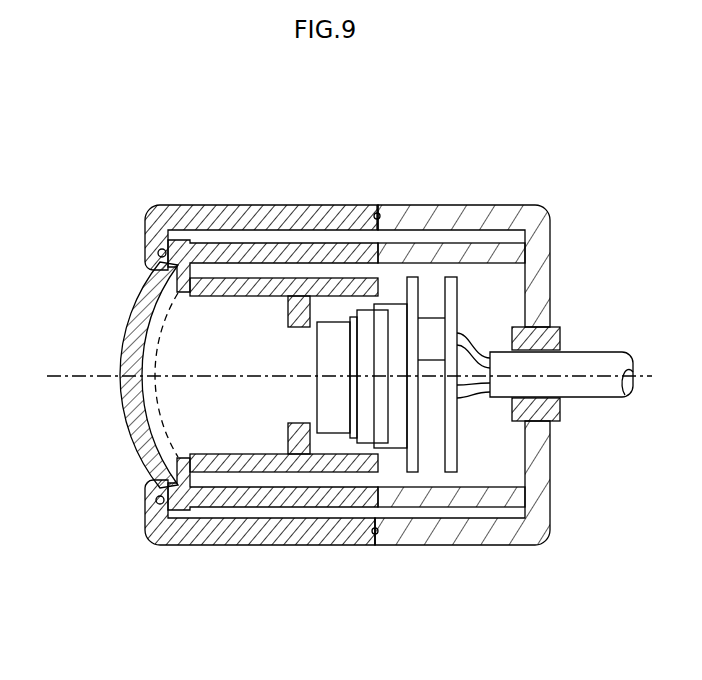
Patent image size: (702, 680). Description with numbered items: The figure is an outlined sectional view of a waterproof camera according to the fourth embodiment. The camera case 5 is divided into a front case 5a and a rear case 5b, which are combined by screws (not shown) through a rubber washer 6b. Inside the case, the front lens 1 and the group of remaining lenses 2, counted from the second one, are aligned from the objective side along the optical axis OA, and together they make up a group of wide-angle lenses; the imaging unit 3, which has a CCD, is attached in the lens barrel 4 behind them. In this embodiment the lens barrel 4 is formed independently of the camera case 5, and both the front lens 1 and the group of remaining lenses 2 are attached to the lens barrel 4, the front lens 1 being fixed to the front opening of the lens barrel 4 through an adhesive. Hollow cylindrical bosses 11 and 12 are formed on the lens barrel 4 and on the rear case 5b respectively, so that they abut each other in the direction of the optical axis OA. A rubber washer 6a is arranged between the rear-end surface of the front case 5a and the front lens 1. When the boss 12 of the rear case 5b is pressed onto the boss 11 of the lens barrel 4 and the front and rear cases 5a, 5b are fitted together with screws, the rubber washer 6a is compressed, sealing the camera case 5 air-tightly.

The front lens 1 is at (128, 425).
The group of remaining lenses 2 is at (233, 430).
The imaging unit 3 is at (468, 305).
The lens barrel 4 is at (290, 468).
The camera case 5 is at (387, 388).
The front case 5a is at (260, 205).
The rear case 5b is at (495, 538).
The rubber washer 6a is at (158, 253).
The rubber washer 6b is at (376, 545).
The boss 11 is at (310, 250).
The boss 12 is at (429, 250).
The optical axis OA is at (75, 376).